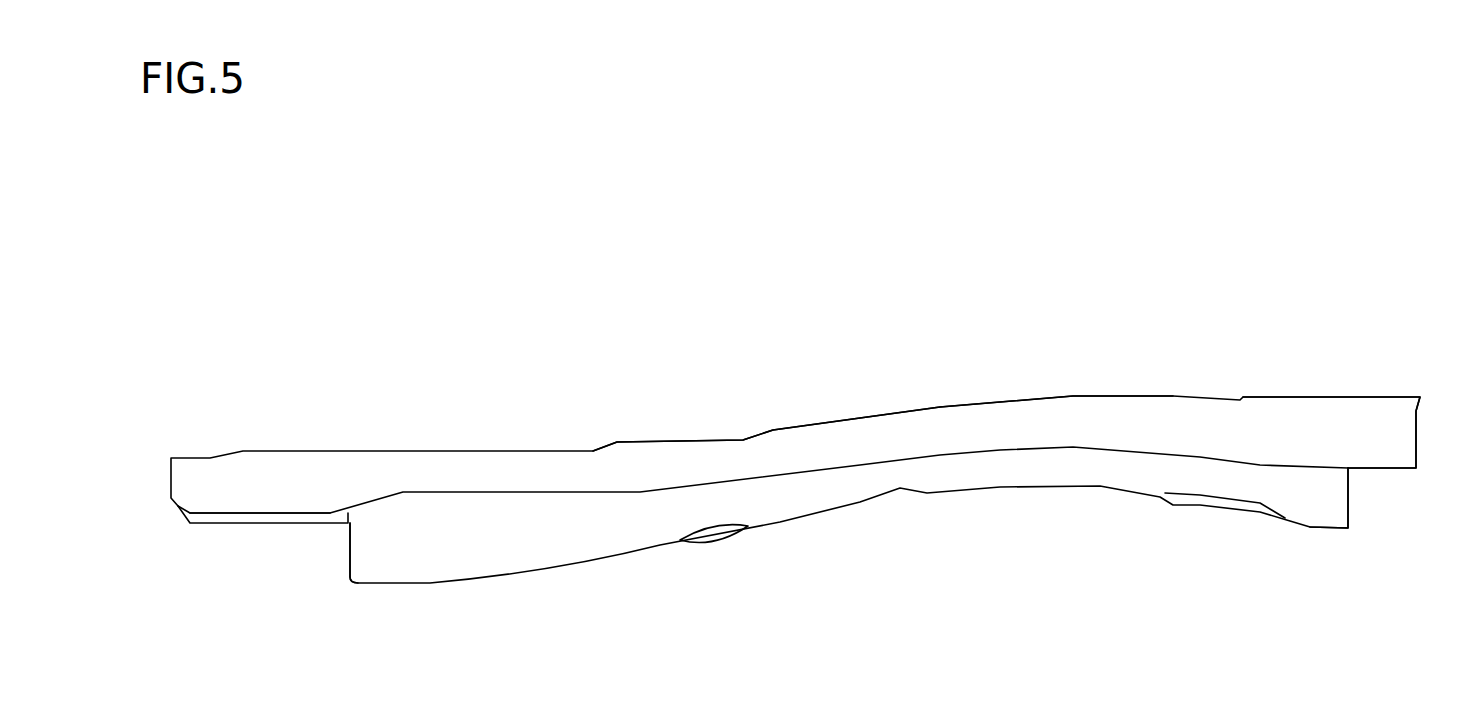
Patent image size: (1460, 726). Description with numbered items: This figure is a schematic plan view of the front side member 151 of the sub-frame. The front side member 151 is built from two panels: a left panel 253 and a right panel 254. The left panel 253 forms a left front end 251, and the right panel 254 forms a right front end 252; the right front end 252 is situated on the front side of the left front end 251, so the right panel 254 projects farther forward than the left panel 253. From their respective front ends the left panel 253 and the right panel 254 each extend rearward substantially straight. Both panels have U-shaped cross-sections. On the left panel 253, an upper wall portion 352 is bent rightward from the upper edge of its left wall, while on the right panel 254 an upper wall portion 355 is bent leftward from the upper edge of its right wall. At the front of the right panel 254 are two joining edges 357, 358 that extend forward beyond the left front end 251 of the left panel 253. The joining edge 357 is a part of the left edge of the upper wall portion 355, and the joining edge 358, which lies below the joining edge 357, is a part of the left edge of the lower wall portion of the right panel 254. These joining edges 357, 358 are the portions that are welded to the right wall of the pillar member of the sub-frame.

The front side member 151 is at (1278, 333).
The right front end 252 is at (169, 482).
The upper wall portion 355 is at (850, 442).
The right panel 254 is at (1422, 395).
The joining edge 358 is at (220, 527).
The joining edge 357 is at (267, 517).
The upper wall portion 352 is at (813, 497).
The left front end 251 is at (347, 547).
The left panel 253 is at (1353, 535).